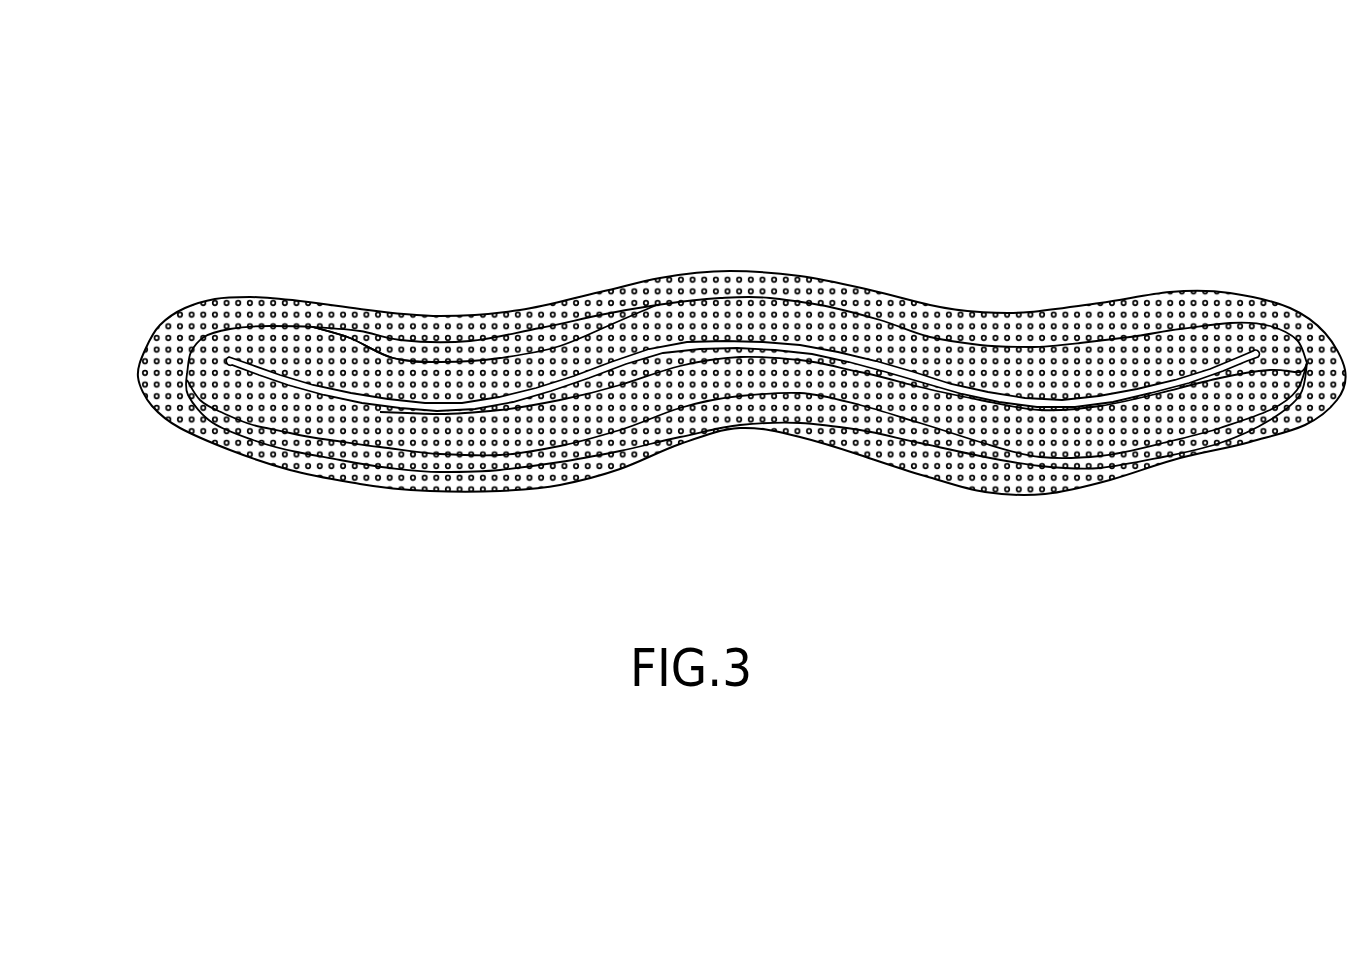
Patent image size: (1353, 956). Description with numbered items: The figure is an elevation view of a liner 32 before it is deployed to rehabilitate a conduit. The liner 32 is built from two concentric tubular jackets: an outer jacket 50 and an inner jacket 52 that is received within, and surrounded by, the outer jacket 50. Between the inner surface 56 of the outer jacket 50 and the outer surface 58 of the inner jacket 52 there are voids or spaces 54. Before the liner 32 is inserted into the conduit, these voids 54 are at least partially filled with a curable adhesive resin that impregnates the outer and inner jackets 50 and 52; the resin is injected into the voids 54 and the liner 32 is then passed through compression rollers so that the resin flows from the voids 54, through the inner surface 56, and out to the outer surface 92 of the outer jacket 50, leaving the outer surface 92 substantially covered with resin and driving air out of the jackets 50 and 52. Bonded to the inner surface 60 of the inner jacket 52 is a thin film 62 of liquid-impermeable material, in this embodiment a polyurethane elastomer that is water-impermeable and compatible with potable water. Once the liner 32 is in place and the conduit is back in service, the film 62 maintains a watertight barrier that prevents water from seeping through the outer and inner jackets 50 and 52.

The liner 32 is at (693, 283).
The outer jacket 50 is at (1100, 303).
The inner jacket 52 is at (1160, 427).
The voids 54 is at (335, 340).
The inner surface of the outer jacket 56 is at (322, 330).
The outer surface of the inner jacket 58 is at (393, 358).
The inner surface of the inner jacket 60 is at (670, 347).
The film 62 is at (730, 350).
The outer surface of the outer jacket 92 is at (978, 312).